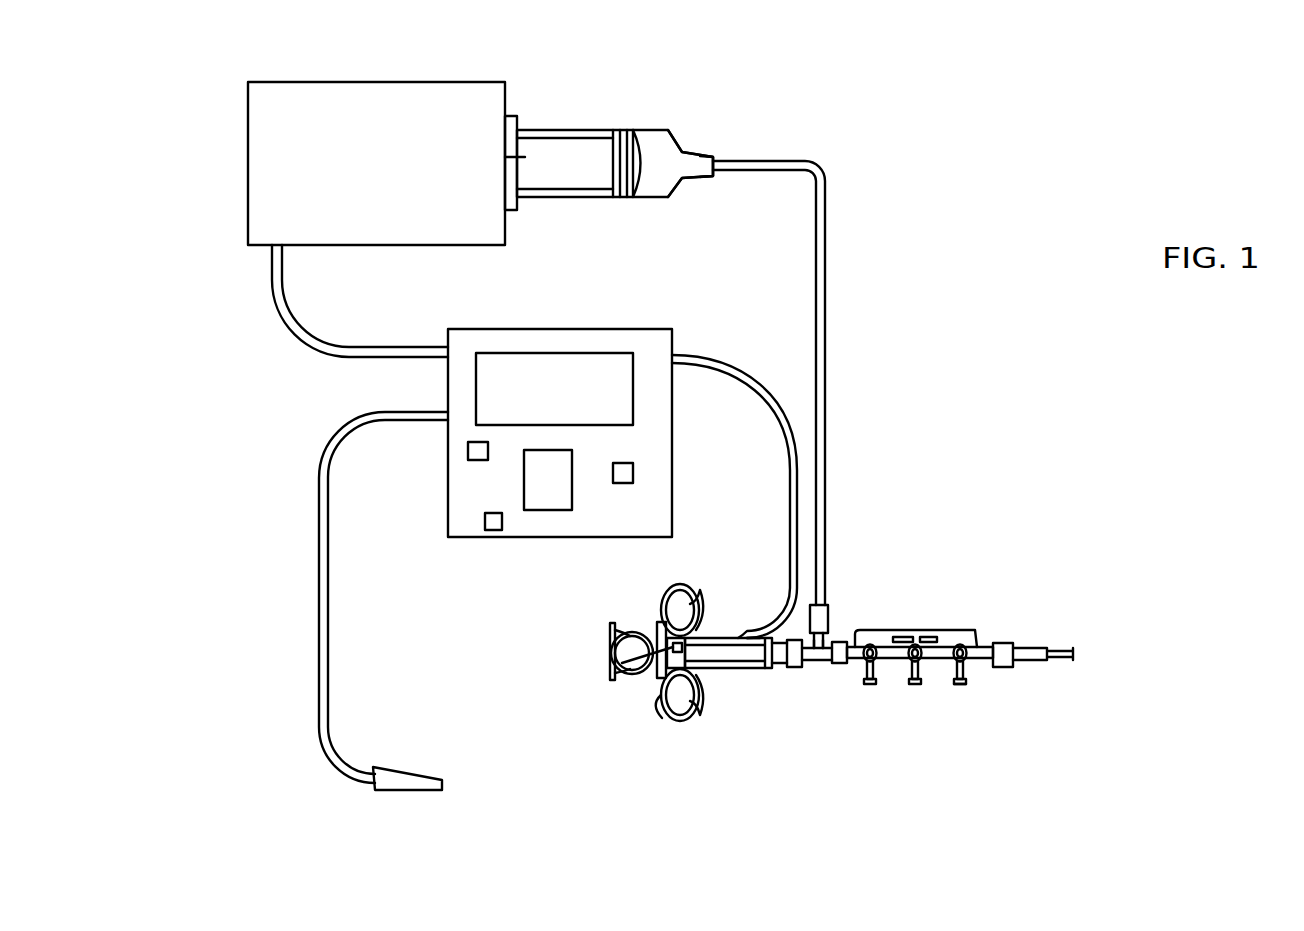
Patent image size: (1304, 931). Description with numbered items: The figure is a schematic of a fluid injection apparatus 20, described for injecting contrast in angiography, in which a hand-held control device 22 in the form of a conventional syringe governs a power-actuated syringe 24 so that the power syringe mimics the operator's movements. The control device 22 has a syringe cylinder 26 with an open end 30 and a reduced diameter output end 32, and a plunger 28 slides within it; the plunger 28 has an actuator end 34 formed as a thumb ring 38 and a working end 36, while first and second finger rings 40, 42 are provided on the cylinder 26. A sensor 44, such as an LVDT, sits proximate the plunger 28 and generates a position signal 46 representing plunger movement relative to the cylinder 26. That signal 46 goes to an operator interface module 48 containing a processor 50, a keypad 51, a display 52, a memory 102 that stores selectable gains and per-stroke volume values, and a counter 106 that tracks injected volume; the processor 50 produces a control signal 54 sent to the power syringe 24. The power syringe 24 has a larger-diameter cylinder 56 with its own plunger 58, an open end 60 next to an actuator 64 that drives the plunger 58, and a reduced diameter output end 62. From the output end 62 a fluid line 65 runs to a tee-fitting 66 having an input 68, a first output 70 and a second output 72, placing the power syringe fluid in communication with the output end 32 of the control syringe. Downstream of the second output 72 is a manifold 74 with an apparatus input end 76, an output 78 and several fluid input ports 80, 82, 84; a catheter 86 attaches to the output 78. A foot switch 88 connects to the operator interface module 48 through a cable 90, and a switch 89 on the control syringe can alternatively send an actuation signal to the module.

The fluid injection apparatus 20 is at (918, 174).
The control device 22 is at (743, 713).
The power-actuated syringe 24 is at (638, 101).
The syringe cylinder 26 is at (730, 672).
The plunger 28 is at (722, 638).
The open end 30 is at (647, 628).
The output end 32 is at (783, 668).
The actuator end 34 is at (612, 672).
The working end 36 is at (755, 638).
The ring 38 is at (612, 656).
The first finger ring 40 is at (678, 585).
The second finger ring 42 is at (697, 705).
The sensor 44 is at (665, 703).
The signal 46 is at (778, 420).
The operator interface module 48 is at (645, 338).
The processor 50 is at (623, 482).
The keypad 51 is at (550, 510).
The display 52 is at (533, 368).
The control signal 54 is at (313, 350).
The cylinder 56 is at (578, 142).
The plunger 58 is at (640, 163).
The open end 60 is at (523, 157).
The output end 62 is at (708, 167).
The actuator 64 is at (316, 90).
The fluid line 65 is at (825, 316).
The tee-fitting 66 is at (852, 645).
The input 68 is at (828, 612).
The first output 70 is at (832, 640).
The second output 72 is at (832, 668).
The manifold 74 is at (945, 652).
The apparatus input end 76 is at (895, 635).
The output 78 is at (987, 650).
The fluid input port 80 is at (875, 685).
The fluid input port 82 is at (922, 685).
The fluid input port 84 is at (968, 680).
The catheter 86 is at (1063, 648).
The foot switch 88 is at (405, 788).
The switch 89 is at (617, 687).
The cable 90 is at (317, 583).
The memory 102 is at (468, 450).
The counter 106 is at (487, 523).